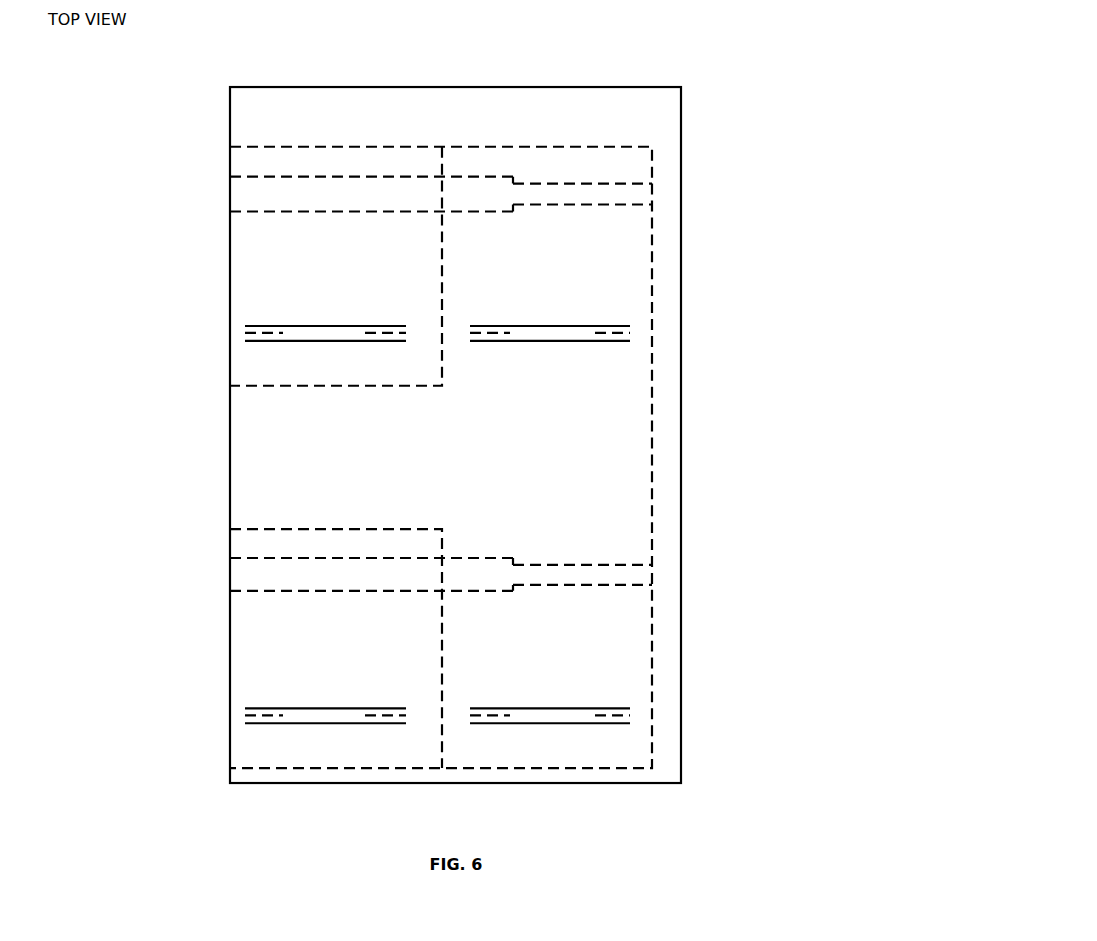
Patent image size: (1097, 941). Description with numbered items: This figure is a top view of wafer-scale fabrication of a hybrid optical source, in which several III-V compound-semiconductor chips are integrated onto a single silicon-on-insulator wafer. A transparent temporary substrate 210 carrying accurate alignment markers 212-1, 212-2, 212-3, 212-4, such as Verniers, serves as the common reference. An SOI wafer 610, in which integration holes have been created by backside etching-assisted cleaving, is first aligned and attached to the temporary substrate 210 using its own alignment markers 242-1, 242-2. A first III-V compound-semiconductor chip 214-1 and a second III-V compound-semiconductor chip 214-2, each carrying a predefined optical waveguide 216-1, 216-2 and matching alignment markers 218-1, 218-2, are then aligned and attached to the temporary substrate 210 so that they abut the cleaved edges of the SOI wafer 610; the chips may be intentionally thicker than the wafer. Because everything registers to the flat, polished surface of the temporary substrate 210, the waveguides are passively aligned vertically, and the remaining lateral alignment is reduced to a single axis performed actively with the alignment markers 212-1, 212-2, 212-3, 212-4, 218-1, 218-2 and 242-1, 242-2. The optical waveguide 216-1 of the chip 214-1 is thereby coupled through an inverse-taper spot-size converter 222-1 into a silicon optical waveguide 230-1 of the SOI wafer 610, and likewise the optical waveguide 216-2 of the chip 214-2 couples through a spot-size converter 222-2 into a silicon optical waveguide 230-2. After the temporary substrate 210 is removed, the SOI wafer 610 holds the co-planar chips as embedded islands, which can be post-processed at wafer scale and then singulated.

The temporary substrate 210 is at (455, 435).
The SOI wafer 610 is at (441, 457).
The III-V compound-semiconductor chip 214-1 is at (336, 266).
The III-V compound-semiconductor chip 214-2 is at (336, 648).
The optical waveguide 216-1 is at (283, 193).
The optical waveguide 216-2 is at (284, 577).
The spot-size converter 222-1 is at (477, 192).
The spot-size converter 222-2 is at (480, 577).
The optical waveguide 230-1 is at (592, 197).
The optical waveguide 230-2 is at (590, 580).
The alignment markers 212-1 is at (265, 327).
The alignment markers 212-2 is at (610, 327).
The alignment markers 212-3 is at (265, 711).
The alignment markers 212-4 is at (608, 711).
The alignment markers 218-1 is at (282, 334).
The alignment markers 218-2 is at (282, 718).
The alignment markers 242-1 is at (508, 336).
The alignment markers 242-2 is at (507, 718).